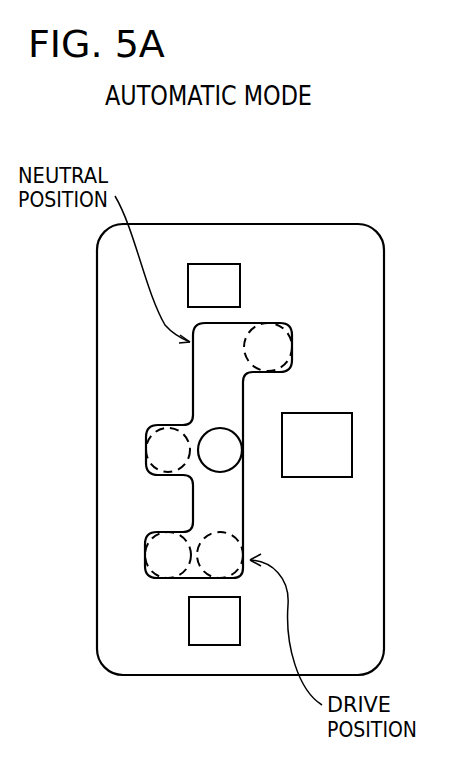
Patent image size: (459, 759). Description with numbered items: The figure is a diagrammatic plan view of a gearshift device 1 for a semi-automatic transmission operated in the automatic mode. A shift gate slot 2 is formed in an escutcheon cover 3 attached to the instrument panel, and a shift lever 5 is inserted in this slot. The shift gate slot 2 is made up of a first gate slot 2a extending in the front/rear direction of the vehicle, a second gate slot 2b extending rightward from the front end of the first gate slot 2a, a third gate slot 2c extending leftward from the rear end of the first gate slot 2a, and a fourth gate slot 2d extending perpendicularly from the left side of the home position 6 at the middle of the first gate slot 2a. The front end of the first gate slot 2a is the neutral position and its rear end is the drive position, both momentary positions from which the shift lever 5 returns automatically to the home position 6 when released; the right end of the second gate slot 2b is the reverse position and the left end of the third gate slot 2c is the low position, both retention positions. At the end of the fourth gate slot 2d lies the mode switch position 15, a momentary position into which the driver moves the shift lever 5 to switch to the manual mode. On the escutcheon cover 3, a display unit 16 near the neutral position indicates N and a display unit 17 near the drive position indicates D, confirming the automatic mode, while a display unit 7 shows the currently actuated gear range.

The gearshift device 1 is at (183, 222).
The shift gate slot 2 is at (187, 373).
The first gate slot 2a is at (195, 395).
The second gate slot 2b is at (291, 338).
The third gate slot 2c is at (153, 572).
The fourth gate slot 2d is at (148, 463).
The escutcheon cover 3 is at (125, 280).
The shift lever 5 is at (220, 473).
The home position 6 is at (242, 477).
The display unit 7 is at (352, 445).
The mode switch position 15 is at (140, 444).
The display unit 16 is at (215, 264).
The display unit 17 is at (217, 645).